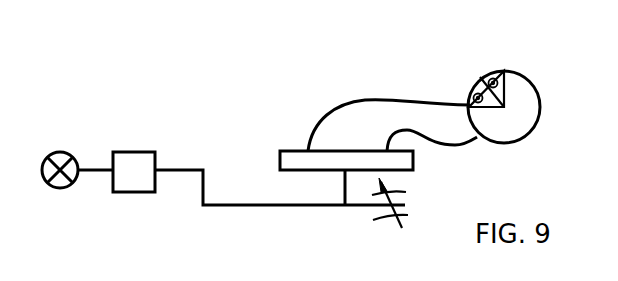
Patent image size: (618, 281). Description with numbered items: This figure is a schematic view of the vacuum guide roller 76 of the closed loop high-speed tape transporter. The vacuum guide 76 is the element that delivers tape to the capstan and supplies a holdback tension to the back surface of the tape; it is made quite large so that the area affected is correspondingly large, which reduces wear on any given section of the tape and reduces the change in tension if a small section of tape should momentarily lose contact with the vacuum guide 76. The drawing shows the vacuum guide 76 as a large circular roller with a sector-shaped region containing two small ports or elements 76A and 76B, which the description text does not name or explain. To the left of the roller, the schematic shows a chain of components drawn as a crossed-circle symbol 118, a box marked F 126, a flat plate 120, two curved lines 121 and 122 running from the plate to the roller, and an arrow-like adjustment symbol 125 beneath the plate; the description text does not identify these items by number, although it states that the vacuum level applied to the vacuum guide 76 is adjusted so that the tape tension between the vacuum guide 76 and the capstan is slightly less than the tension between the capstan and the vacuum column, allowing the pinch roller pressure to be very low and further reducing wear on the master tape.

The light source 118 is at (63, 152).
The filter 126 is at (138, 152).
The beam splitter plate 120 is at (280, 160).
The optical fiber 121 is at (351, 82).
The optical fiber 122 is at (393, 124).
The vacuum guide roller 76 is at (535, 80).
The detector 76A is at (473, 90).
The detector 76B is at (496, 70).
The adjustment arrow 125 is at (393, 226).